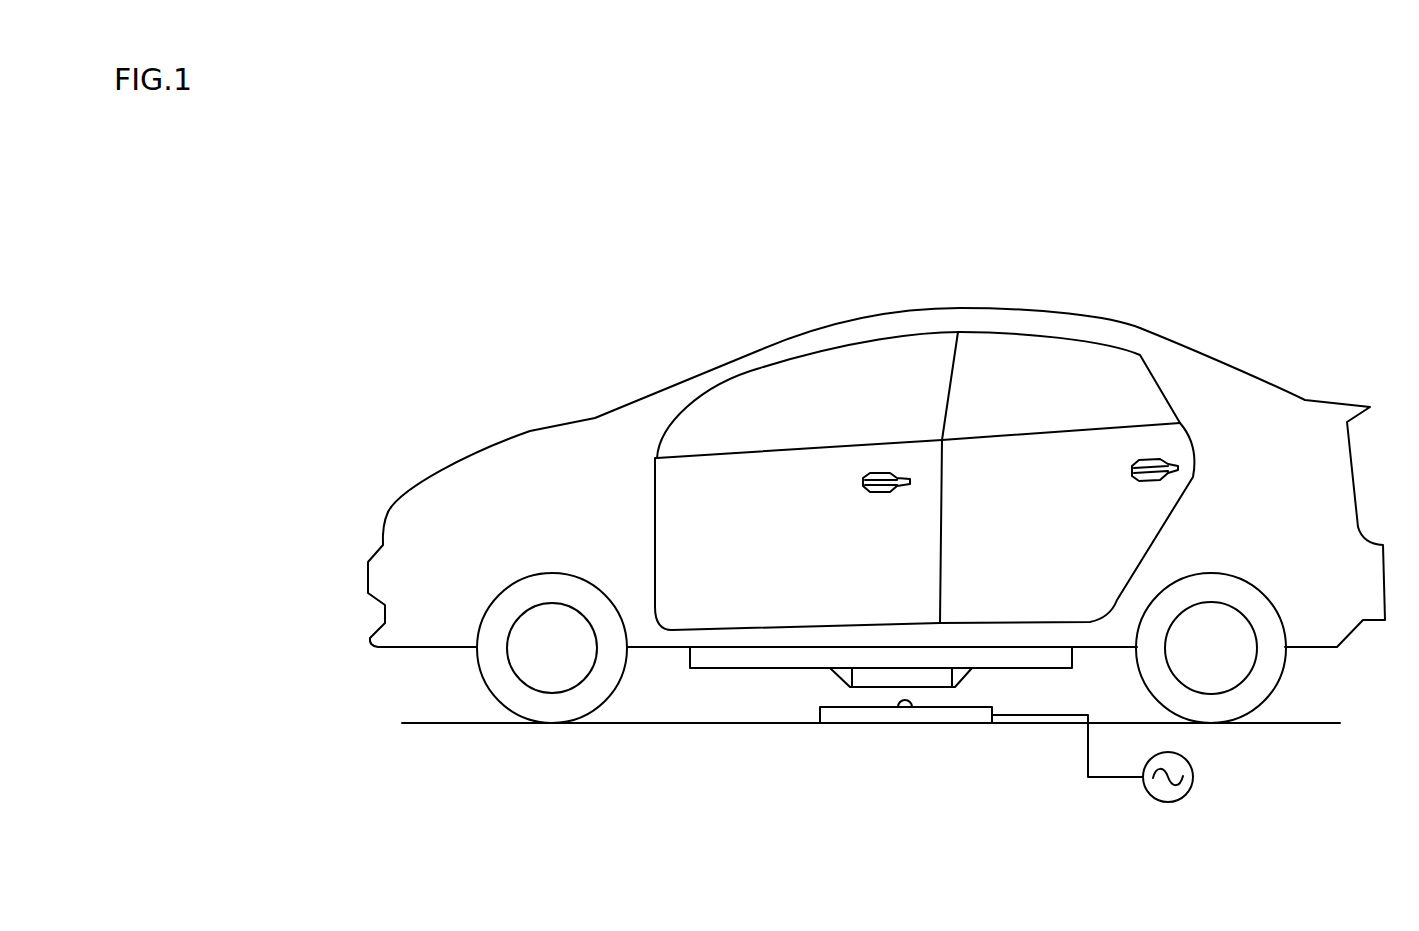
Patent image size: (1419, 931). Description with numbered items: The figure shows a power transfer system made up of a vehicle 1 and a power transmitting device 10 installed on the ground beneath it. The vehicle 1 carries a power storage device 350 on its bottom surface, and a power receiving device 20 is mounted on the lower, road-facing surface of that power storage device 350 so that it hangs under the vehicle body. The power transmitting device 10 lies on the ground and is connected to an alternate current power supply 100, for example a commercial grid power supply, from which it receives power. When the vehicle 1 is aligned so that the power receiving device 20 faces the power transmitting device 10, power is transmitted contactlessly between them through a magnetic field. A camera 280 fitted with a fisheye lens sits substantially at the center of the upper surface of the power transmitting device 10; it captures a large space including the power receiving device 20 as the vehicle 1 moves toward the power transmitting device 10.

The vehicle 1 is at (1062, 273).
The power transmitting device 10 is at (913, 748).
The power receiving device 20 is at (818, 699).
The alternate current (AC) power supply 100 is at (1194, 774).
The camera 280 is at (911, 700).
The power storage device 350 is at (720, 670).